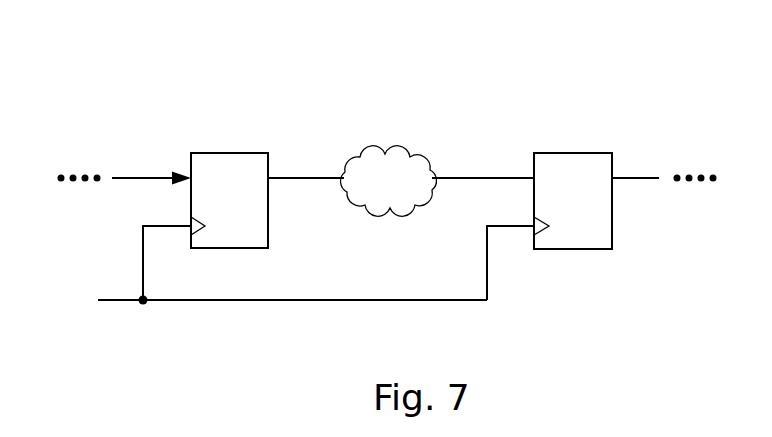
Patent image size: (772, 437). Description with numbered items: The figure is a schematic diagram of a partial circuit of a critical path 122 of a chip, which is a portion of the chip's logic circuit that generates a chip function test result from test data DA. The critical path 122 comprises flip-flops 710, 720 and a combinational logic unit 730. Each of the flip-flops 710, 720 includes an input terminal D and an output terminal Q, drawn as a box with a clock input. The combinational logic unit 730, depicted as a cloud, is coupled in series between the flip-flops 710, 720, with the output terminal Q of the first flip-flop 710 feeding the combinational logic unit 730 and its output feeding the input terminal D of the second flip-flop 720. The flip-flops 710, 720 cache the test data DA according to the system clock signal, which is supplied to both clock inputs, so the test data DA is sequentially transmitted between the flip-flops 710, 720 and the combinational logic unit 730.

The critical path 122 is at (146, 48).
The flip-flop 710 is at (236, 153).
The flip-flop 720 is at (578, 153).
The combinational logic unit 730 is at (420, 152).